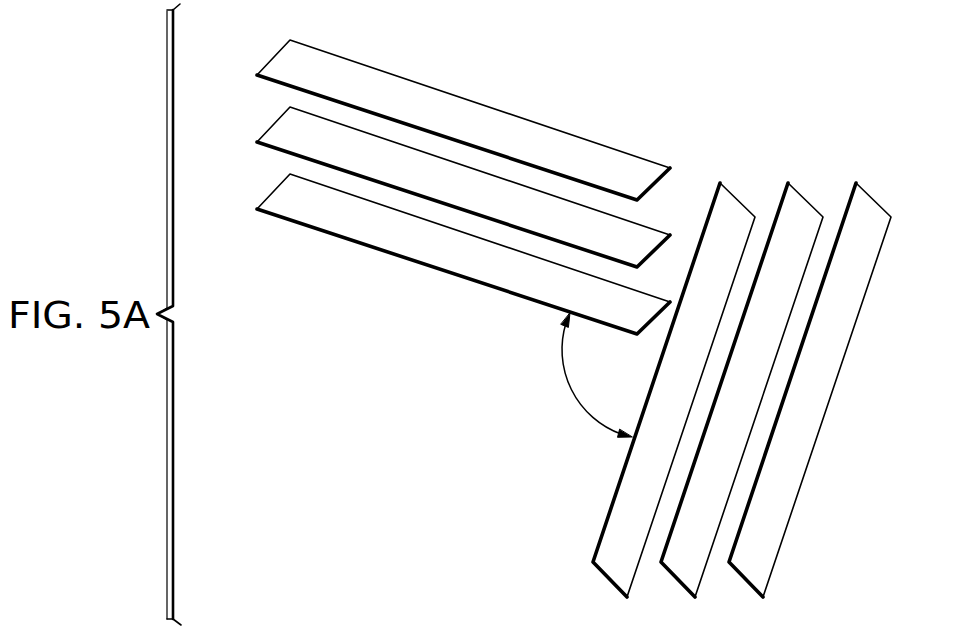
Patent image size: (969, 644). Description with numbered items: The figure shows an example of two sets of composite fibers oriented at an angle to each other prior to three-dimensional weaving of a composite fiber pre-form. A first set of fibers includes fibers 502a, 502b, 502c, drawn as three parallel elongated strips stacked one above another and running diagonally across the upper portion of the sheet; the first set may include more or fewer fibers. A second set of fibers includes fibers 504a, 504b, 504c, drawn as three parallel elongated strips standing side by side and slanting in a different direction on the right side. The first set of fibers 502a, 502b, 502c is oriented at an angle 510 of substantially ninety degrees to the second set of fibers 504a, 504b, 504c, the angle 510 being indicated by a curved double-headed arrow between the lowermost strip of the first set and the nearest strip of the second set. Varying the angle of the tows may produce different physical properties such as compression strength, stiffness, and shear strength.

The fiber of first set 502a is at (272, 53).
The fiber of first set 502b is at (272, 120).
The fiber of first set 502c is at (272, 188).
The fiber of second set 504a is at (729, 191).
The fiber of second set 504b is at (804, 199).
The fiber of second set 504c is at (896, 182).
The angle 510 is at (574, 392).